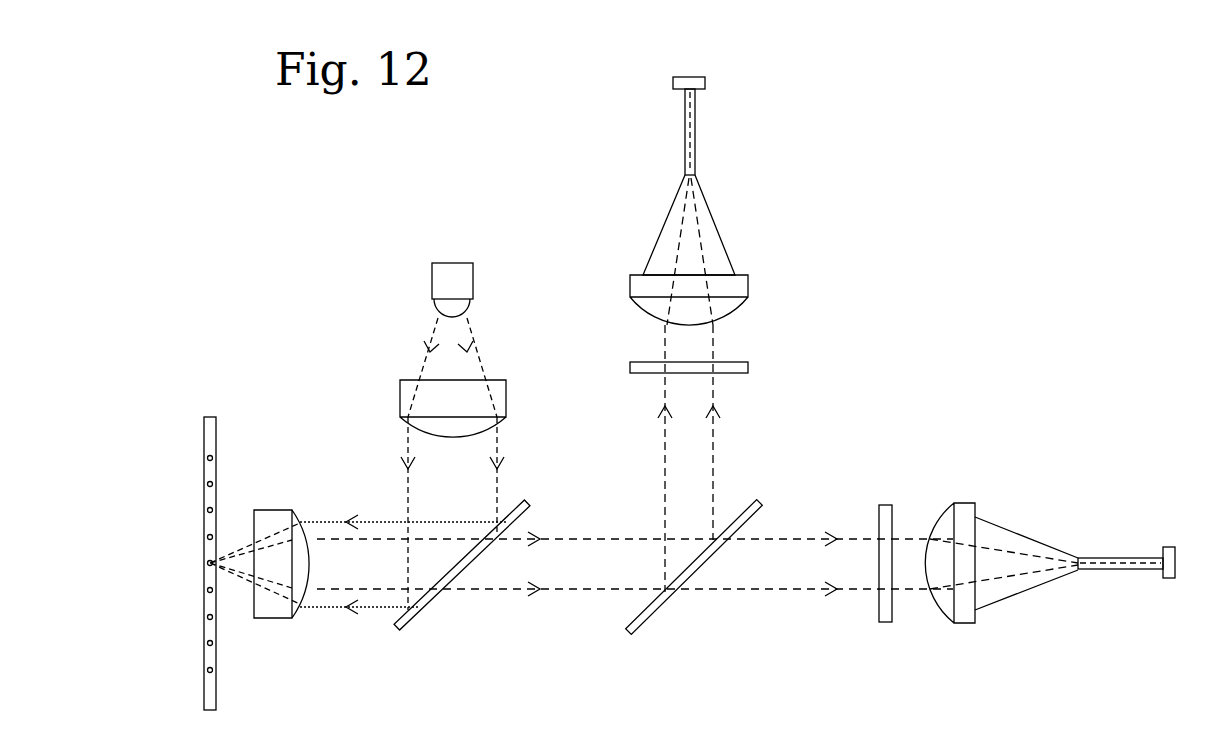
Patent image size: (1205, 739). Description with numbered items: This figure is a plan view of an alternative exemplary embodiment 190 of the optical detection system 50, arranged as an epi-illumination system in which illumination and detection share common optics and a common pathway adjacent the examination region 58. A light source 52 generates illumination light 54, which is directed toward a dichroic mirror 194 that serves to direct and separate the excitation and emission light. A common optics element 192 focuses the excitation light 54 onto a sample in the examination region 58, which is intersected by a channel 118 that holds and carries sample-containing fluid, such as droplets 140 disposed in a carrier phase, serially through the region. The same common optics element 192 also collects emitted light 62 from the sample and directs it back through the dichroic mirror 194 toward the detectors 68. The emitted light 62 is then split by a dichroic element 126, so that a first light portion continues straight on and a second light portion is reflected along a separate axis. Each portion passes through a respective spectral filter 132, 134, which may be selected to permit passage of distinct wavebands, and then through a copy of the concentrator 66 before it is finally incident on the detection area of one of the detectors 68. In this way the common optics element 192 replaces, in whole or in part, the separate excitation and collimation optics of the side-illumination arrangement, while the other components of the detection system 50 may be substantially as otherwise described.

The detection system 50 is at (576, 226).
The light source 52 is at (432, 281).
The illumination light 54 is at (406, 486).
The examination region 58 is at (170, 563).
The emitted light 62 is at (598, 553).
The concentrator 66 is at (727, 252).
The detectors 68 is at (697, 94).
The channel 118 is at (207, 466).
The dichroic element 126 is at (658, 616).
The spectral filter 132 is at (891, 621).
The spectral filter 134 is at (740, 361).
The droplets 140 is at (207, 620).
The alternative exemplary embodiment 190 is at (603, 266).
The common optics element 192 is at (286, 509).
The dichroic mirror 194 is at (420, 611).